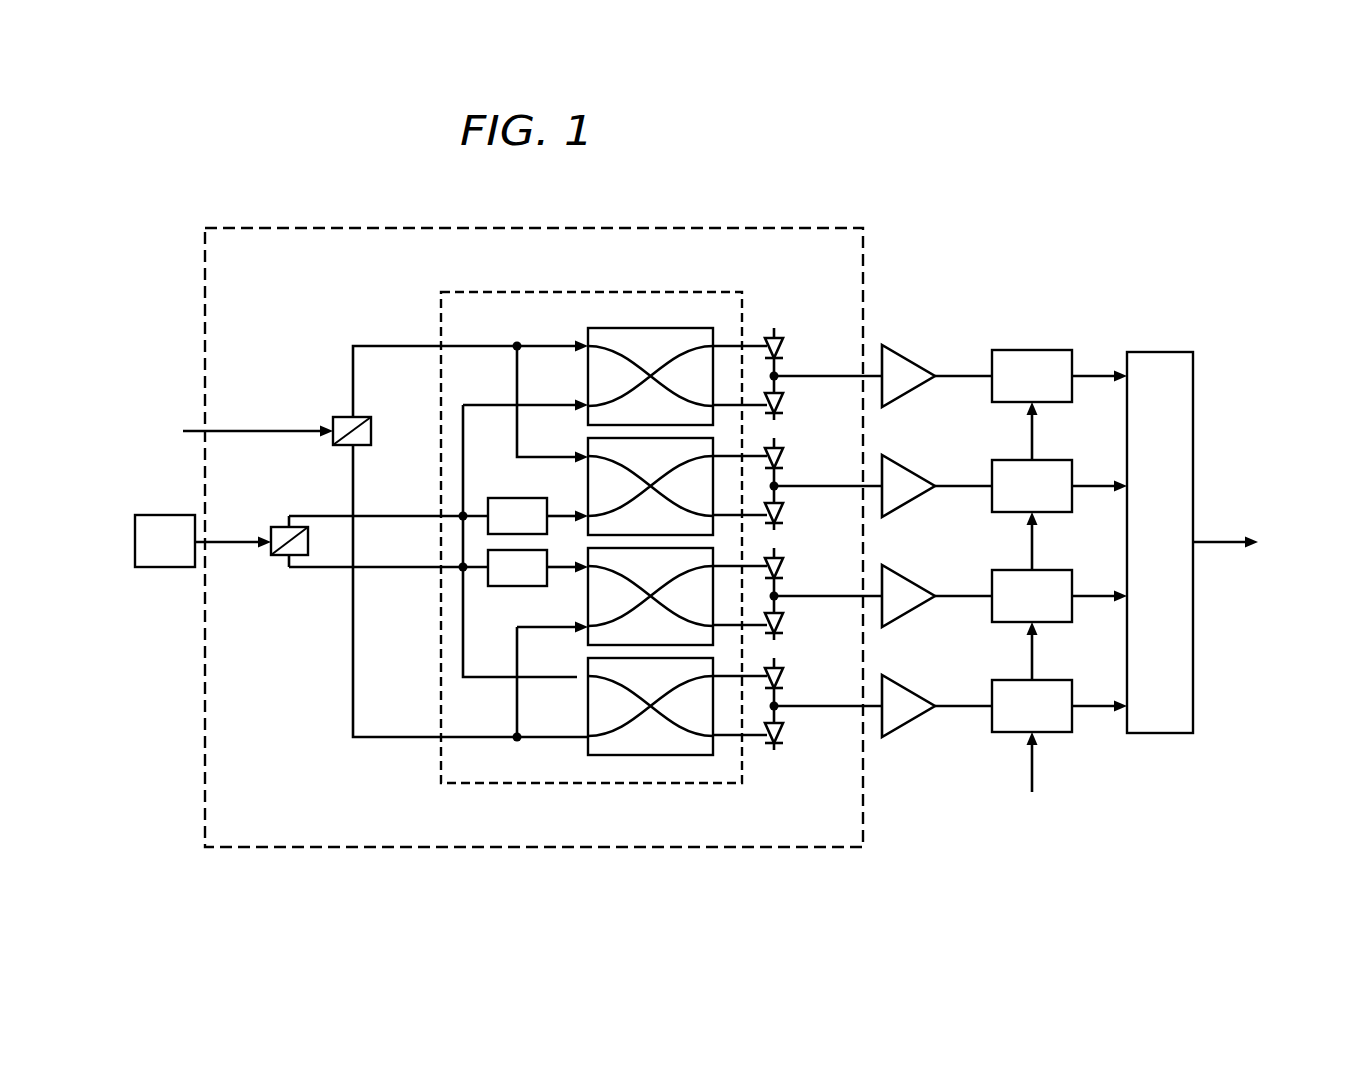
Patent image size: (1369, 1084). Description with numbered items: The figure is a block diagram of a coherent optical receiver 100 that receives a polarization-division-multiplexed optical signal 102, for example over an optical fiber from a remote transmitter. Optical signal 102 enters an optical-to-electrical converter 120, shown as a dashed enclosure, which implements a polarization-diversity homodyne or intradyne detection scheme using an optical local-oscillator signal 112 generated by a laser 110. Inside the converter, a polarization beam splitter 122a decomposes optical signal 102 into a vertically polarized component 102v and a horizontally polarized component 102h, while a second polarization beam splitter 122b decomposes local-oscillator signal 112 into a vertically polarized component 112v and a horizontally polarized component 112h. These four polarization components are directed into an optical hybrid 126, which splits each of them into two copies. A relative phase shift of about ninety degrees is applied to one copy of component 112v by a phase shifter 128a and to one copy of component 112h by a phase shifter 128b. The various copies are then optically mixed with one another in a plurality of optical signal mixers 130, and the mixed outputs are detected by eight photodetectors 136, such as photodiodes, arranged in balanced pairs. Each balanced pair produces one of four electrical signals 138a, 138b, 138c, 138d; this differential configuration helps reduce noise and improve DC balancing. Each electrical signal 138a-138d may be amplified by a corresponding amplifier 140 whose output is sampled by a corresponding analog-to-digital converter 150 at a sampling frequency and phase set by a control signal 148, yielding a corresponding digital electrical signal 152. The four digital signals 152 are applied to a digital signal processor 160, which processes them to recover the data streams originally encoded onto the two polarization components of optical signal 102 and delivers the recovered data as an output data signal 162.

The coherent optical receiver 100 is at (542, 194).
The optical signal 102 is at (233, 428).
The vertically polarized component 102v is at (356, 387).
The horizontally polarized component 102h is at (356, 480).
The laser 110 is at (135, 541).
The optical local-oscillator signal 112 is at (233, 548).
The vertically polarized component 112v is at (414, 518).
The horizontally polarized component 112h is at (393, 570).
The optical-to-electrical converter 120 is at (205, 249).
The polarization beam splitter 122a is at (332, 440).
The polarization beam splitter 122b is at (291, 557).
The optical hybrid 126 is at (604, 292).
The phase shifter 128a is at (508, 497).
The phase shifter 128b is at (508, 587).
The optical signal mixer 130 is at (668, 356).
The photodetector 136 is at (774, 309).
The electrical signal 138a is at (824, 372).
The electrical signal 138b is at (824, 482).
The electrical signal 138c is at (824, 592).
The electrical signal 138d is at (824, 702).
The amplifier 140 is at (903, 353).
The control signal 148 is at (1034, 776).
The analog-to-digital converter 150 is at (1019, 403).
The digital electrical signal 152 is at (1094, 372).
The digital signal processor 160 is at (1150, 352).
The output data signal 162 is at (1223, 539).